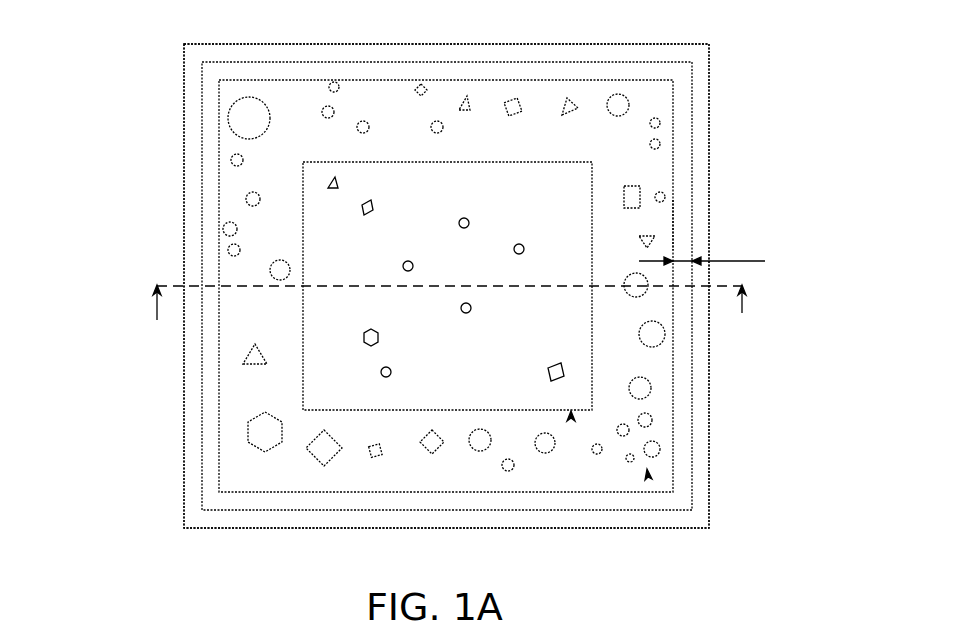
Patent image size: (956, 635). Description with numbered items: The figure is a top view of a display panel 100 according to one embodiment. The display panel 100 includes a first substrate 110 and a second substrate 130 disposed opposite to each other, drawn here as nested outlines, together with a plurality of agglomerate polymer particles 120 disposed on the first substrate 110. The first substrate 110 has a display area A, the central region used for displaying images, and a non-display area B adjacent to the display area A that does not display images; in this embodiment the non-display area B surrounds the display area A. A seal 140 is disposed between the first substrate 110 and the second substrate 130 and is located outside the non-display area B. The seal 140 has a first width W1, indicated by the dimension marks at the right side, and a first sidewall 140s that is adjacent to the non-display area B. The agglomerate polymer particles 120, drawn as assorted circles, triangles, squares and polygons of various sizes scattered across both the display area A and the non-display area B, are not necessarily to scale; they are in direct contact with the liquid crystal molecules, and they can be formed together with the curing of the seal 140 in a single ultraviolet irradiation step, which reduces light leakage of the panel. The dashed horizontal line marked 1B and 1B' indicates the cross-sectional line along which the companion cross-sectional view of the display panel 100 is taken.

The display panel 100 is at (72, 62).
The first substrate 110 is at (491, 280).
The second substrate 130 is at (752, 57).
The agglomerate polymer particles 120 is at (464, 98).
The seal 140 is at (683, 95).
The first sidewall 140s is at (674, 223).
The first width W1 is at (702, 250).
The display area A is at (571, 415).
The non-display area B is at (648, 473).
The cross-sectional line 1B is at (443, 317).
The cross-sectional line 1B' is at (742, 317).